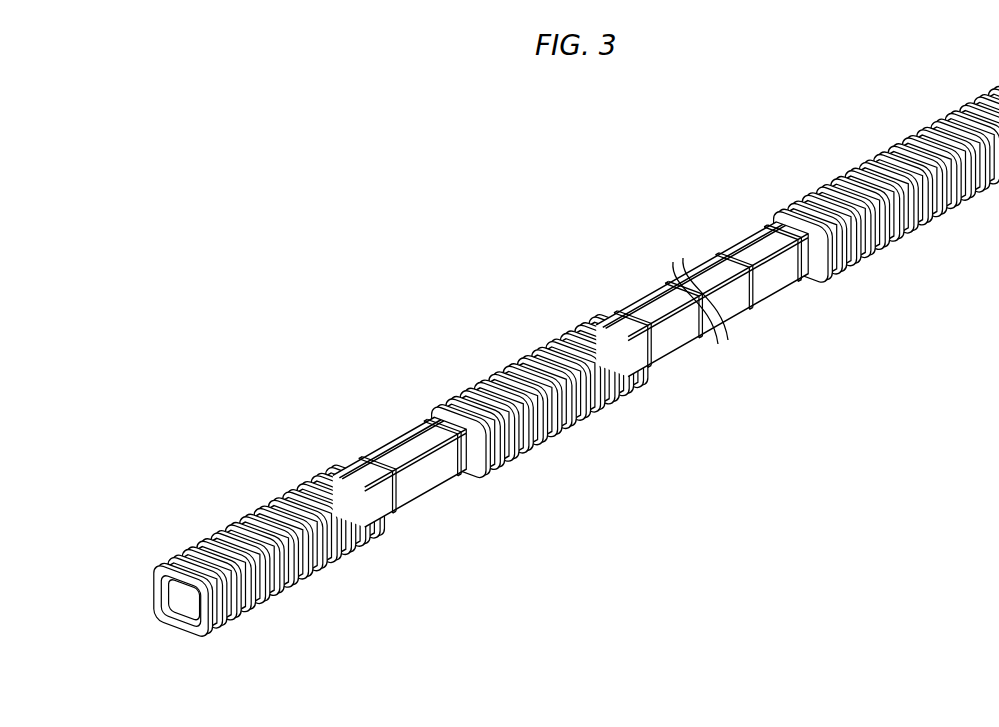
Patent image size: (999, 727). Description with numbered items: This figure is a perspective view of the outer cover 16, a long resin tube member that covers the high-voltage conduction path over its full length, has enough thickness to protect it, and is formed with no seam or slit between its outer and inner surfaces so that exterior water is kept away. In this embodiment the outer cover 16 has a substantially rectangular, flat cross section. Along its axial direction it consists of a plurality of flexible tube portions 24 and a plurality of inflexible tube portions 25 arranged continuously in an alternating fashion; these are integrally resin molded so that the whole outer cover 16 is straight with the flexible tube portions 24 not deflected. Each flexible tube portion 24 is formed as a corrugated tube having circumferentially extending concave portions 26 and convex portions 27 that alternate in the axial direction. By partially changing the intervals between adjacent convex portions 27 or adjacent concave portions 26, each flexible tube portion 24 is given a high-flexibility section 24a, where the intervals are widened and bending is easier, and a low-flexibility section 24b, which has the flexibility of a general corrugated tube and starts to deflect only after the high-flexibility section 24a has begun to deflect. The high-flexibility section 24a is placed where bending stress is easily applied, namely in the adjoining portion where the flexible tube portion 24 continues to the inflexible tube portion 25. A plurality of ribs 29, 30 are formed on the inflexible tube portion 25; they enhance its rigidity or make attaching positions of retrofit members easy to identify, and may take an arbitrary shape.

The outer cover 16 is at (303, 285).
The flexible tube portion 24 is at (236, 506).
The high-flexibility section 24a is at (367, 560).
The low-flexibility section 24b is at (291, 593).
The inflexible tube portion 25 is at (384, 432).
The concave portion 26 is at (387, 541).
The convex portion 27 is at (400, 531).
The rib 29 is at (424, 498).
The rib 30 is at (378, 450).